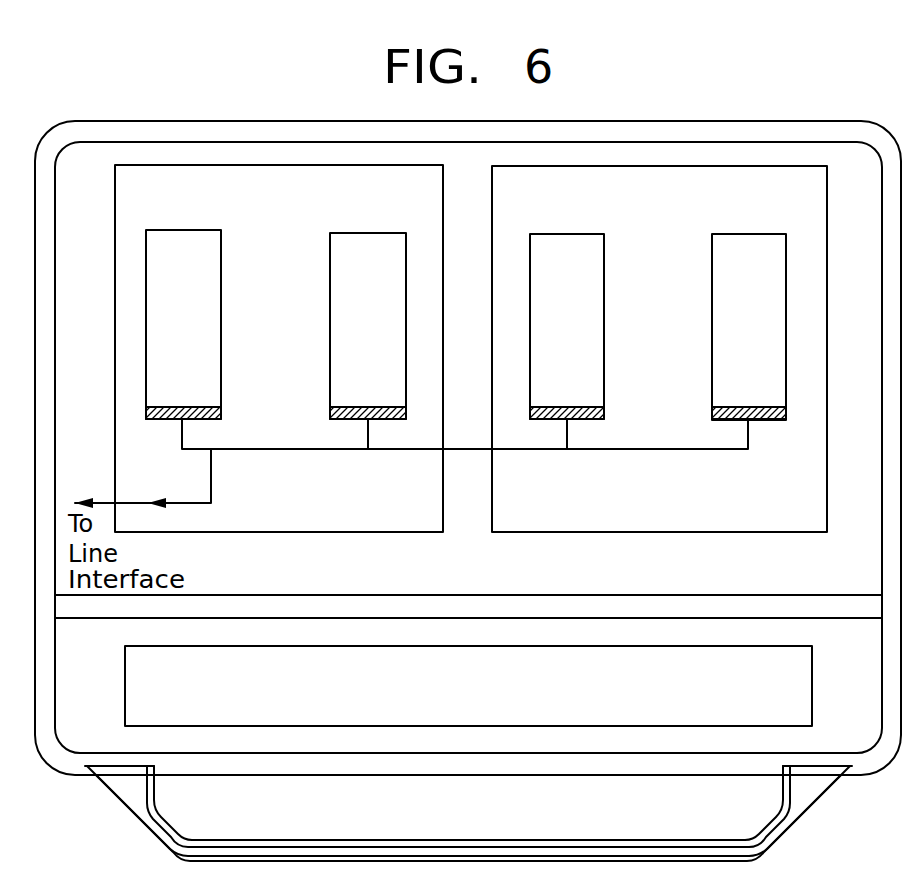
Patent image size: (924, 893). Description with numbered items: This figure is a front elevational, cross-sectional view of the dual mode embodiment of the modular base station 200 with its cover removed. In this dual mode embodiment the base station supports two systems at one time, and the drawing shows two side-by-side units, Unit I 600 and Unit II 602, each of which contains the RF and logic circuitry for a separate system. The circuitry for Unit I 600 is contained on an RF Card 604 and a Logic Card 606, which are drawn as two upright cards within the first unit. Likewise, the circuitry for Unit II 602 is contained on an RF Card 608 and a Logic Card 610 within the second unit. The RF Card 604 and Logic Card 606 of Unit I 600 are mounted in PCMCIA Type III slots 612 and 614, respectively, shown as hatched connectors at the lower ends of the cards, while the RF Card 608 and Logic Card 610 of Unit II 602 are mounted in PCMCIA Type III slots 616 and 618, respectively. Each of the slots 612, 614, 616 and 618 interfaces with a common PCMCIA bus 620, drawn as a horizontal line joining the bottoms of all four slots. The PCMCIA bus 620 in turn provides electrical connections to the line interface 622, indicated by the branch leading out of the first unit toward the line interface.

The base station 200 is at (690, 106).
The Unit I 600 is at (131, 208).
The Unit II 602 is at (797, 193).
The RF Card 604 is at (147, 327).
The Logic Card 606 is at (330, 314).
The RF Card 608 is at (604, 315).
The Logic Card 610 is at (786, 318).
The PCMCIA Type III slot 612 is at (147, 411).
The PCMCIA Type III slot 614 is at (330, 411).
The PCMCIA Type III slot 616 is at (604, 414).
The PCMCIA Type III slot 618 is at (786, 413).
The PCMCIA bus 620 is at (625, 450).
The line interface 622 is at (211, 478).